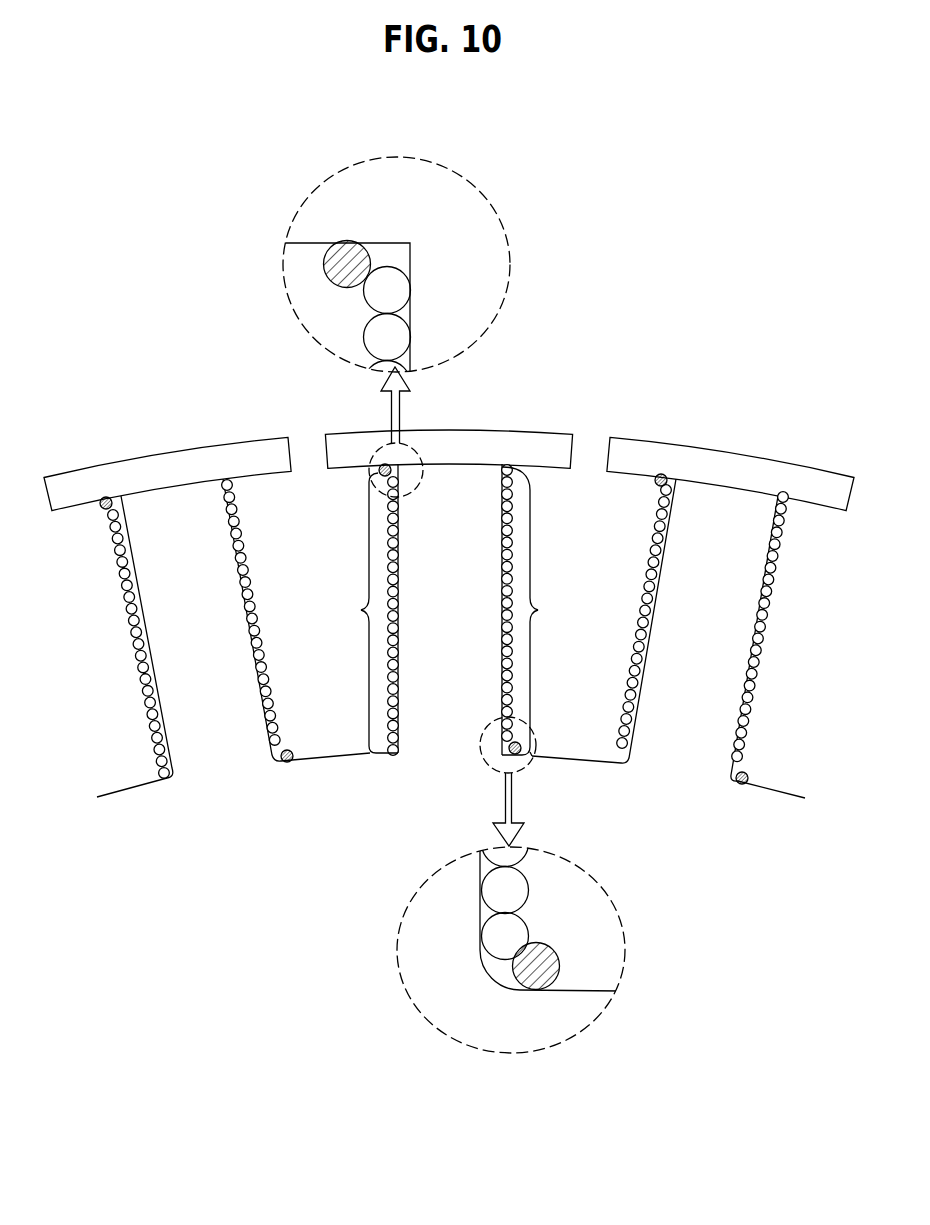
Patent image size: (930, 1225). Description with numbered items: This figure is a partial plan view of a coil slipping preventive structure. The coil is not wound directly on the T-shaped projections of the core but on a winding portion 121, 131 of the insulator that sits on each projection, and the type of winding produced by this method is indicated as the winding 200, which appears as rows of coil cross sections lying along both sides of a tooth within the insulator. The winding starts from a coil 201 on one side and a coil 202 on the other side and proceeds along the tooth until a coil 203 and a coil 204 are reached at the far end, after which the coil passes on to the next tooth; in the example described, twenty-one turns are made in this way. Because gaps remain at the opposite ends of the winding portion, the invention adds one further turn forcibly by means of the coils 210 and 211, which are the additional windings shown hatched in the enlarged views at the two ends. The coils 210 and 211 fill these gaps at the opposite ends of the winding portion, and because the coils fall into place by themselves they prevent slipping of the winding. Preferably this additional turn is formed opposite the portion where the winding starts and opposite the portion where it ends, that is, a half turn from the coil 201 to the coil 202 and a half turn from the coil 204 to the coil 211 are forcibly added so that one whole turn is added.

The winding portion 121 is at (449, 447).
The winding portion 131 is at (733, 470).
The winding 200 is at (452, 611).
The coil 201 is at (388, 756).
The coil 202 is at (548, 885).
The coil 203 is at (389, 308).
The coil 204 is at (513, 472).
The additional winding 210 is at (548, 958).
The additional winding 211 is at (344, 254).